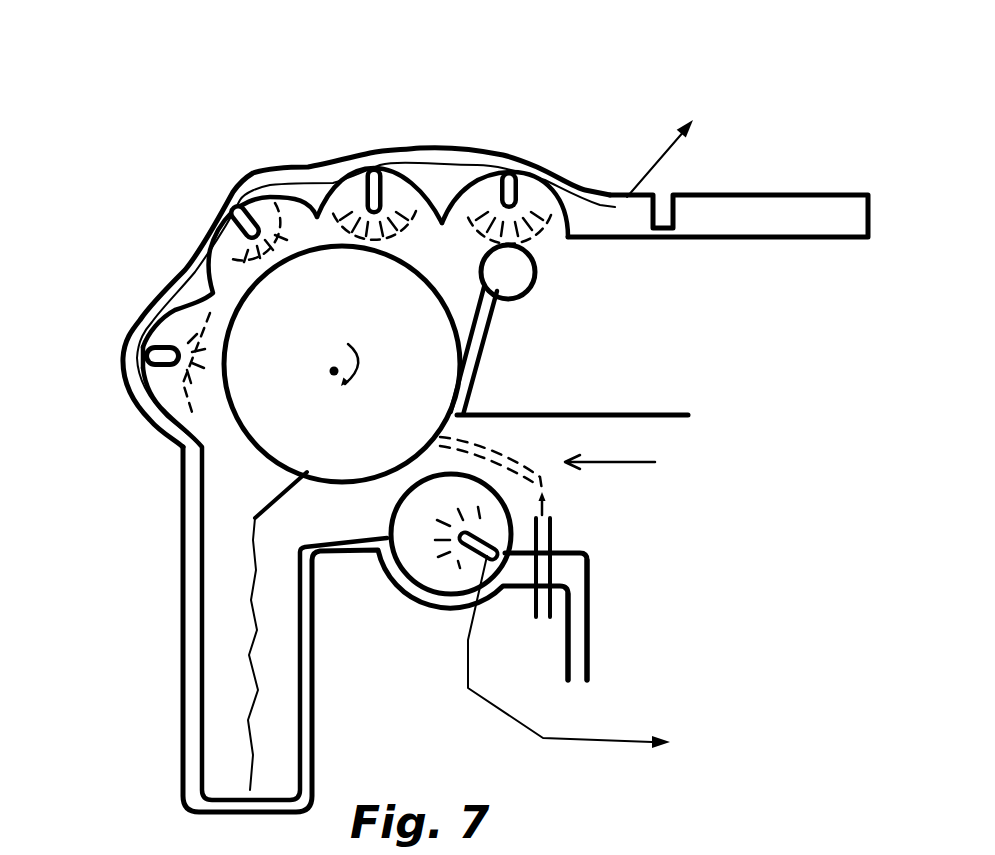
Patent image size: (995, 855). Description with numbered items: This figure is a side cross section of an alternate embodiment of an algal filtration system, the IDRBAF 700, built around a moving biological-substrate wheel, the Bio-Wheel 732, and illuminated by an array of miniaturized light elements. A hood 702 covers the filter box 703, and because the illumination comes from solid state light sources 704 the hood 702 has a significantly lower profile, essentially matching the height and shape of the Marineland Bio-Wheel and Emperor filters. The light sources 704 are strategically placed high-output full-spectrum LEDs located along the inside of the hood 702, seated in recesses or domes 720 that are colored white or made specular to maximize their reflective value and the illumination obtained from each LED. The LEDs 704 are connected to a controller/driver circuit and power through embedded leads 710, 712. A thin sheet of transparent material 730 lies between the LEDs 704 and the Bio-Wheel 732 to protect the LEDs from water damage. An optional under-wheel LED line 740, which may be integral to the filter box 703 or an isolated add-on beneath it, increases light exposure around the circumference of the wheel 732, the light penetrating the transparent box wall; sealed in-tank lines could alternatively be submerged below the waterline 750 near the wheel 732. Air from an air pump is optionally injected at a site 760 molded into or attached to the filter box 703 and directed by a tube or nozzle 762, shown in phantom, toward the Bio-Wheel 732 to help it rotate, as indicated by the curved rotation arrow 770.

The IDRBAF 700 is at (528, 118).
The hood 702 is at (300, 113).
The filter box 703 is at (668, 570).
The solid state light sources 704 is at (367, 187).
The embedded lead 710 is at (143, 333).
The embedded lead 712 is at (573, 740).
The recesses or domes 720 is at (390, 165).
The thin sheet of transparent material 730 is at (230, 277).
The Bio-Wheel 732 is at (417, 325).
The under-wheel LED line 740 is at (428, 587).
The waterline 750 is at (640, 415).
The air injection site 760 is at (552, 537).
The tube or nozzle 762 is at (548, 480).
The curved rotation arrow 770 is at (365, 373).